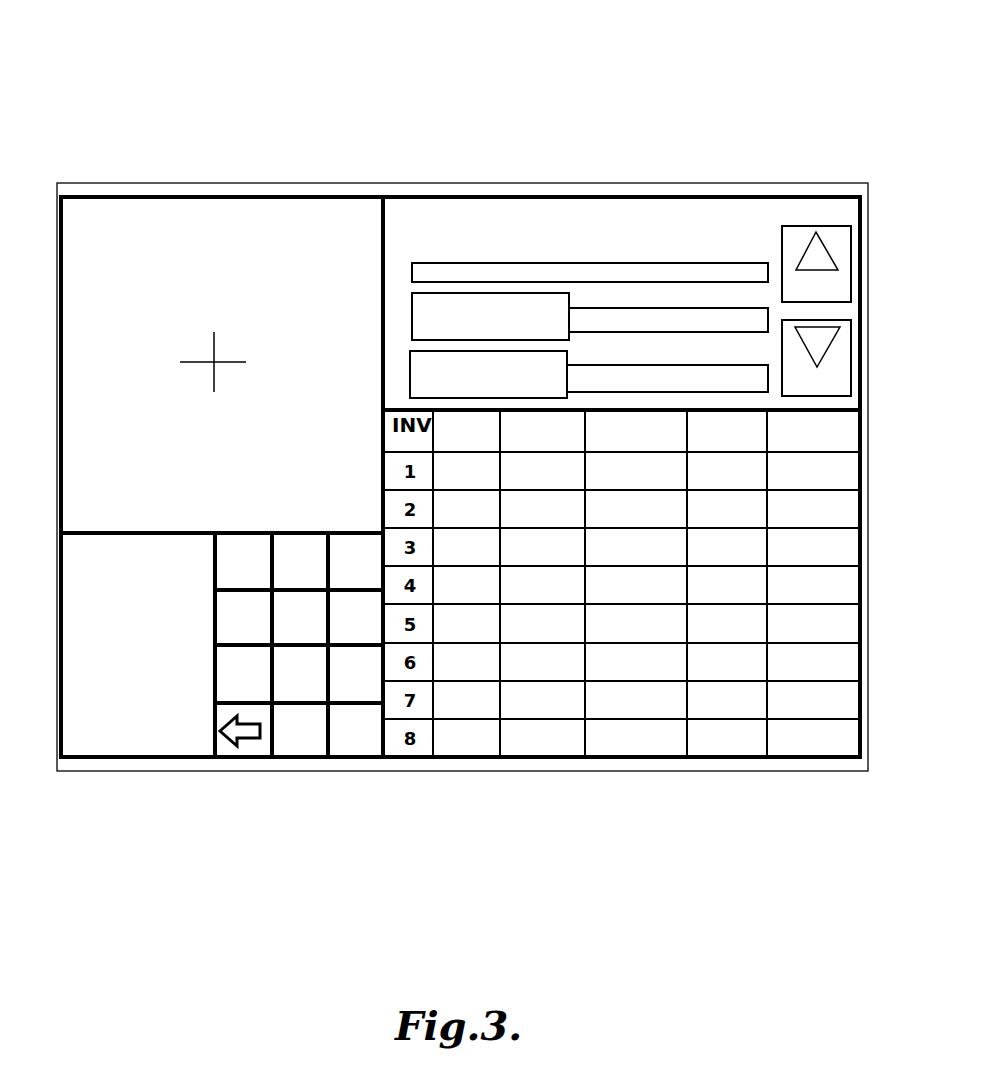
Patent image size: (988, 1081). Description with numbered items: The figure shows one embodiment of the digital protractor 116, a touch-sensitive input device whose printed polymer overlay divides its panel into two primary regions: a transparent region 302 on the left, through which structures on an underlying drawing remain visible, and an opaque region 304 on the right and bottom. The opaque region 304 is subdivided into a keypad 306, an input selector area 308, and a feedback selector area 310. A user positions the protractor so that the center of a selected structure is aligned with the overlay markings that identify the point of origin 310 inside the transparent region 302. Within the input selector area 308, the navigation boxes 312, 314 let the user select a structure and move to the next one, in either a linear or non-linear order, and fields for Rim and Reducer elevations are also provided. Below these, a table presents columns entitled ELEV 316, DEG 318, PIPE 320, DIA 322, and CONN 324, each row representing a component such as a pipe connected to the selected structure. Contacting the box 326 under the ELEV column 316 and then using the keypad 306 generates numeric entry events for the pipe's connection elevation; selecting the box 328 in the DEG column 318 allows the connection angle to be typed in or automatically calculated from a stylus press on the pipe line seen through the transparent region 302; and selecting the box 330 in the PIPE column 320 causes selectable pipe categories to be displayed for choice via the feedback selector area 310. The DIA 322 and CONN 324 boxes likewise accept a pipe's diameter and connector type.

The digital protractor 116 is at (243, 112).
The transparent region 302 is at (93, 212).
The opaque region 304 is at (847, 195).
The keypad 306 is at (262, 758).
The input selector area 308 is at (628, 198).
The feedback selector area / point of origin 310 is at (216, 362).
The navigation box 312 is at (851, 229).
The next navigation box 314 is at (851, 320).
The ELEV column 316 is at (481, 760).
The DEG column 318 is at (541, 760).
The PIPE column 320 is at (631, 760).
The DIA column 322 is at (725, 760).
The CONN column 324 is at (818, 760).
The box under ELEV column 326 is at (484, 477).
The box in DEG column 328 is at (562, 465).
The box in PIPE column 330 is at (655, 487).